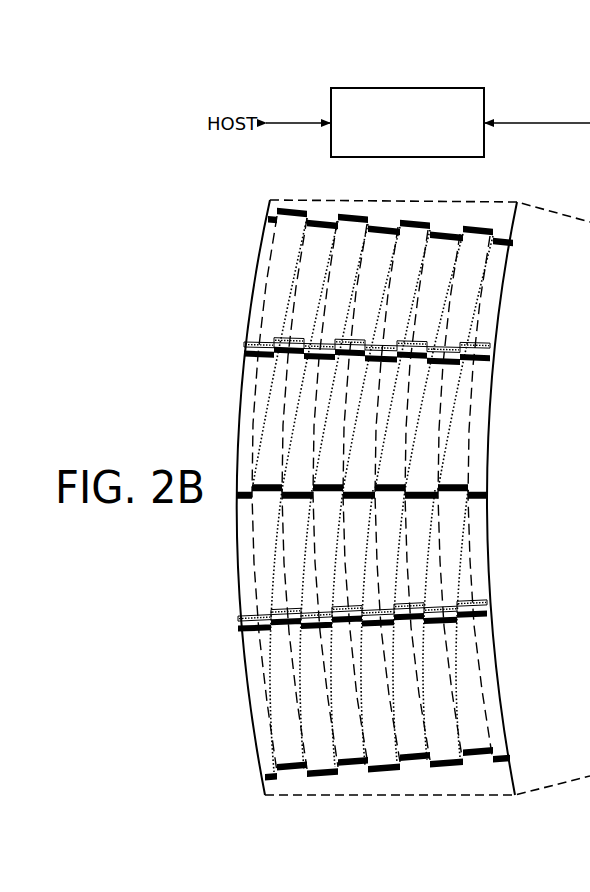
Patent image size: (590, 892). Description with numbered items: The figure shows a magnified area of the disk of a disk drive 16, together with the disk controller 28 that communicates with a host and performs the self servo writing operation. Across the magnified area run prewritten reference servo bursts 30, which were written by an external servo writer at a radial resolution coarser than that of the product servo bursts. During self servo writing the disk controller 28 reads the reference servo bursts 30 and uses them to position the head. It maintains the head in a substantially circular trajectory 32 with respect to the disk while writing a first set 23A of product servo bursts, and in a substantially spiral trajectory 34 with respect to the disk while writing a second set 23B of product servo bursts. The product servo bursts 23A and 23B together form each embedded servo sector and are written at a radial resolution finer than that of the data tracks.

The disk drive 16 is at (172, 81).
The disk controller 28 is at (408, 88).
The reference servo bursts 30 is at (515, 242).
The first set of product servo bursts 23A is at (498, 347).
The second set of product servo bursts 23B is at (498, 363).
The circular trajectory 32 is at (252, 600).
The spiral trajectory 34 is at (275, 552).